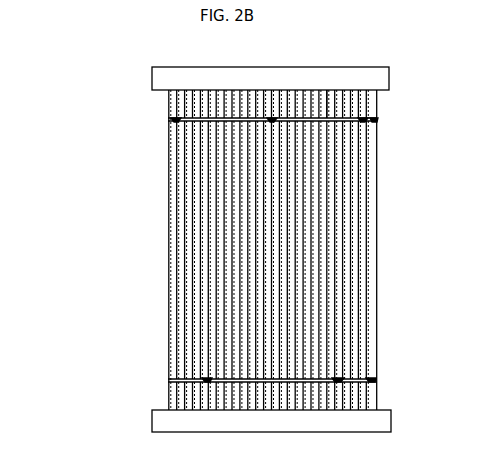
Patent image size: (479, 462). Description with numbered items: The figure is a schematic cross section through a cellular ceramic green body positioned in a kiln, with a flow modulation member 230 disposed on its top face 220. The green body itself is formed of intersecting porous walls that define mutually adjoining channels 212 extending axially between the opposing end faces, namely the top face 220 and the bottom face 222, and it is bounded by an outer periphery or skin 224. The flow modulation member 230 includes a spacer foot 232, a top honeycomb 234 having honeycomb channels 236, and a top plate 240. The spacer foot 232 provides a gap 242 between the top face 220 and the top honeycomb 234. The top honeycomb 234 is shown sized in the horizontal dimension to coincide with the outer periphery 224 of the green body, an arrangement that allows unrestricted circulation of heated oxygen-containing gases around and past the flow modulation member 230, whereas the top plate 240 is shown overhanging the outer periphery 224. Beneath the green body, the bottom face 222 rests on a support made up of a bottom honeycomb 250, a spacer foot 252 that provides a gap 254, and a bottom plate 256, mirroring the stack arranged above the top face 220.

The flow modulation member 230 is at (68, 70).
The top plate 240 is at (152, 76).
The top honeycomb 234 is at (168, 100).
The spacer foot 232 is at (168, 120).
The honeycomb channels 236 is at (323, 103).
The gap 242 is at (376, 120).
The top face 220 is at (365, 122).
The channels 212 is at (190, 204).
The skin 224 is at (168, 272).
The bottom face 222 is at (168, 377).
The spacer foot 252 is at (339, 378).
The gap 254 is at (377, 382).
The bottom honeycomb 250 is at (168, 402).
The bottom plate 256 is at (152, 420).